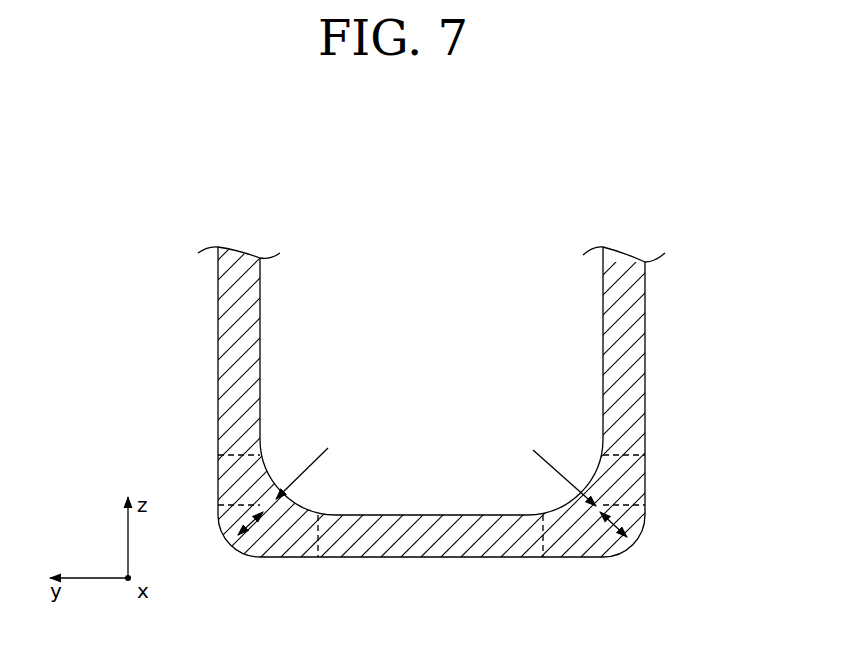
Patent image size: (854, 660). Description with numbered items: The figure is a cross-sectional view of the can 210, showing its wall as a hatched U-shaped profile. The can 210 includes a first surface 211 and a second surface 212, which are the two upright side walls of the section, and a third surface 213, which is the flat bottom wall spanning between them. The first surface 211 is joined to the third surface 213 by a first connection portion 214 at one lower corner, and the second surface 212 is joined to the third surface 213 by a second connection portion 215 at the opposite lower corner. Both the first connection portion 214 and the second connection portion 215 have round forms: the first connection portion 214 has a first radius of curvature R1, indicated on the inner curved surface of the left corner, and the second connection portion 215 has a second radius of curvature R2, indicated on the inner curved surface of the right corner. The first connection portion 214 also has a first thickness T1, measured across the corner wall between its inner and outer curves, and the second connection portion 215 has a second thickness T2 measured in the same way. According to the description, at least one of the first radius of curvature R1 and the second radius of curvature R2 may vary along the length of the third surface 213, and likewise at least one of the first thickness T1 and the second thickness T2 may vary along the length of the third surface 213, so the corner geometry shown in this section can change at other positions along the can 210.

The can 210 is at (452, 226).
The first surface 211 is at (226, 355).
The second surface 212 is at (636, 362).
The third surface 213 is at (475, 548).
The first connection portion 214 is at (260, 546).
The second connection portion 215 is at (600, 548).
The first thickness T1 is at (245, 515).
The second thickness T2 is at (617, 517).
The first radius of curvature R1 is at (302, 470).
The second radius of curvature R2 is at (564, 473).